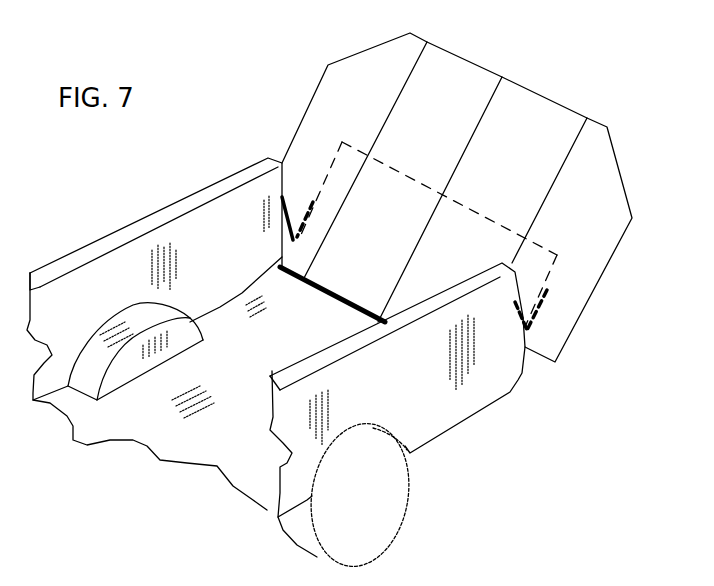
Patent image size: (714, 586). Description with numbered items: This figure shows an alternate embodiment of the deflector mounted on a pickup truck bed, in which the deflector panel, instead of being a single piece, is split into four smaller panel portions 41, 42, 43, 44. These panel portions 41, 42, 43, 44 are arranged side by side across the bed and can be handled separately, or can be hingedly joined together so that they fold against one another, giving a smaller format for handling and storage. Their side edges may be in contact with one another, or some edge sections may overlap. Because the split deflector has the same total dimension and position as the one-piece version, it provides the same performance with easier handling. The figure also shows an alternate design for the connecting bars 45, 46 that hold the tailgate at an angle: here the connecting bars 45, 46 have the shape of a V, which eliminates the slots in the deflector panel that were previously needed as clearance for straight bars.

The panel portion 41 is at (330, 117).
The panel portion 42 is at (427, 115).
The panel portion 43 is at (515, 145).
The panel portion 44 is at (584, 182).
The connecting bar 45 is at (293, 227).
The connecting bar 46 is at (527, 325).